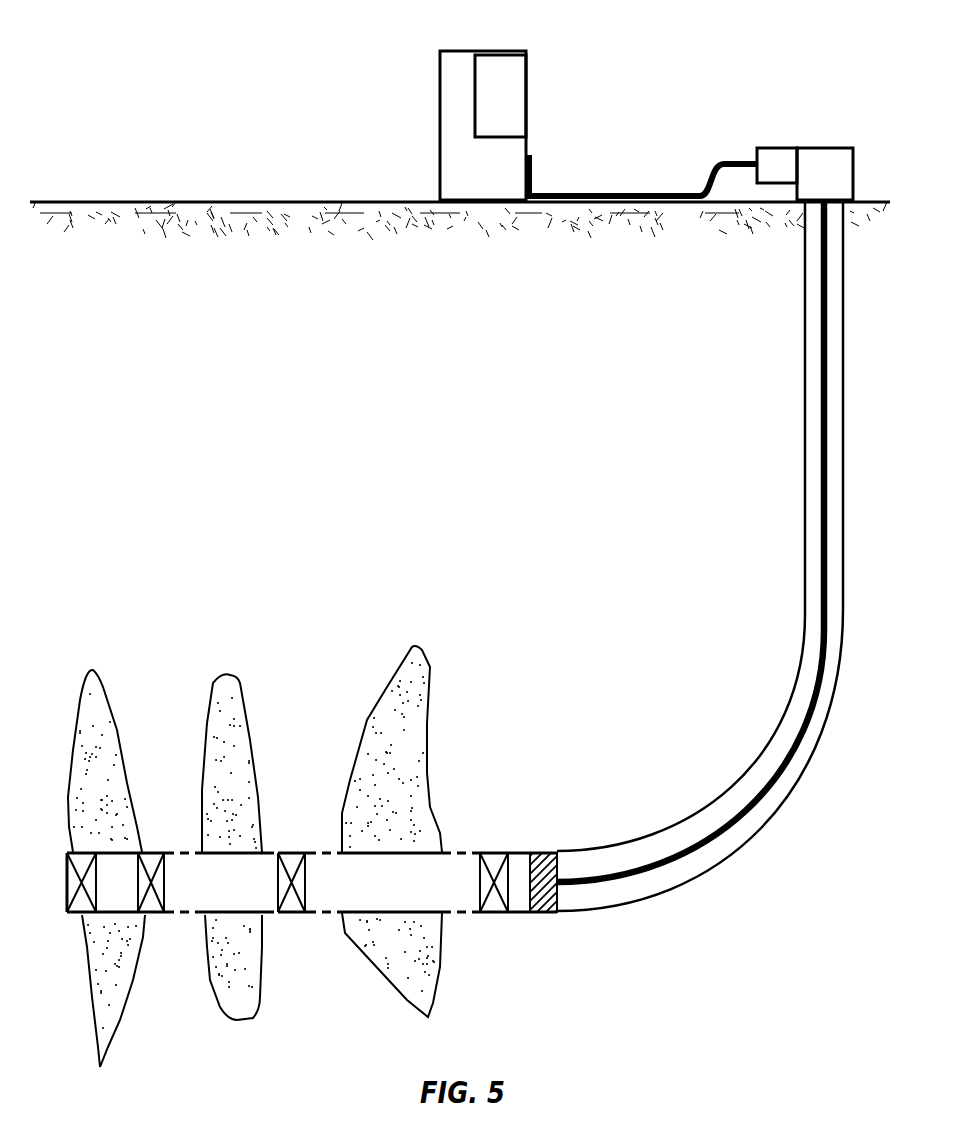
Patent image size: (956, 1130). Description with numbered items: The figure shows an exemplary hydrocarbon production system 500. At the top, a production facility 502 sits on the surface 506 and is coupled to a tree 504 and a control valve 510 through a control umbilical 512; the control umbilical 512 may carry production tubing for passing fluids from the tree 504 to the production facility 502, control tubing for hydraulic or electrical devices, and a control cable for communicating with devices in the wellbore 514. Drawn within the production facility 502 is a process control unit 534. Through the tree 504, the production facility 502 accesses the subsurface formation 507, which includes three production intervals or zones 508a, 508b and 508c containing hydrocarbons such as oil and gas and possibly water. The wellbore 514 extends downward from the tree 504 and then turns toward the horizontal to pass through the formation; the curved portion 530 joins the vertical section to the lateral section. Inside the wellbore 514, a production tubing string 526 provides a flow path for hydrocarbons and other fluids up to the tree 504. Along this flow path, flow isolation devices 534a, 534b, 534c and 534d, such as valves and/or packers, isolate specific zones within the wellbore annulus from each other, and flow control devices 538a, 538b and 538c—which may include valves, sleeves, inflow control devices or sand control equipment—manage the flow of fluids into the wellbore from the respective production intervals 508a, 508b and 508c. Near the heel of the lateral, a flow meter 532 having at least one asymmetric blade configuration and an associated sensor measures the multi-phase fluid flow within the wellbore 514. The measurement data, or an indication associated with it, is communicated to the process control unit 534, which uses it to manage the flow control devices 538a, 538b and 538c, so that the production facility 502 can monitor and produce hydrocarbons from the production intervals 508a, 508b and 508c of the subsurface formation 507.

The production system 500 is at (633, 83).
The production facility 502 is at (459, 50).
The process control unit 534 is at (516, 89).
The control umbilical 512 is at (633, 192).
The control valve 510 is at (771, 148).
The tree 504 is at (848, 148).
The surface 506 is at (249, 201).
The wellbore 514 is at (721, 555).
The production tubing string 526 is at (805, 507).
The deviated section of wellbore 530 is at (810, 688).
The subsurface formation 507 is at (333, 601).
The production interval 508a is at (421, 662).
The production interval 508b is at (237, 685).
The production interval 508c is at (96, 677).
The flow control device 538a is at (431, 898).
The flow control device 538b is at (248, 898).
The flow control device 538c is at (128, 898).
The flow isolation device 534a is at (494, 858).
The flow isolation device 534b is at (292, 858).
The flow isolation device 534c is at (152, 858).
The flow isolation device 534d is at (73, 886).
The flow meter 532 is at (541, 858).